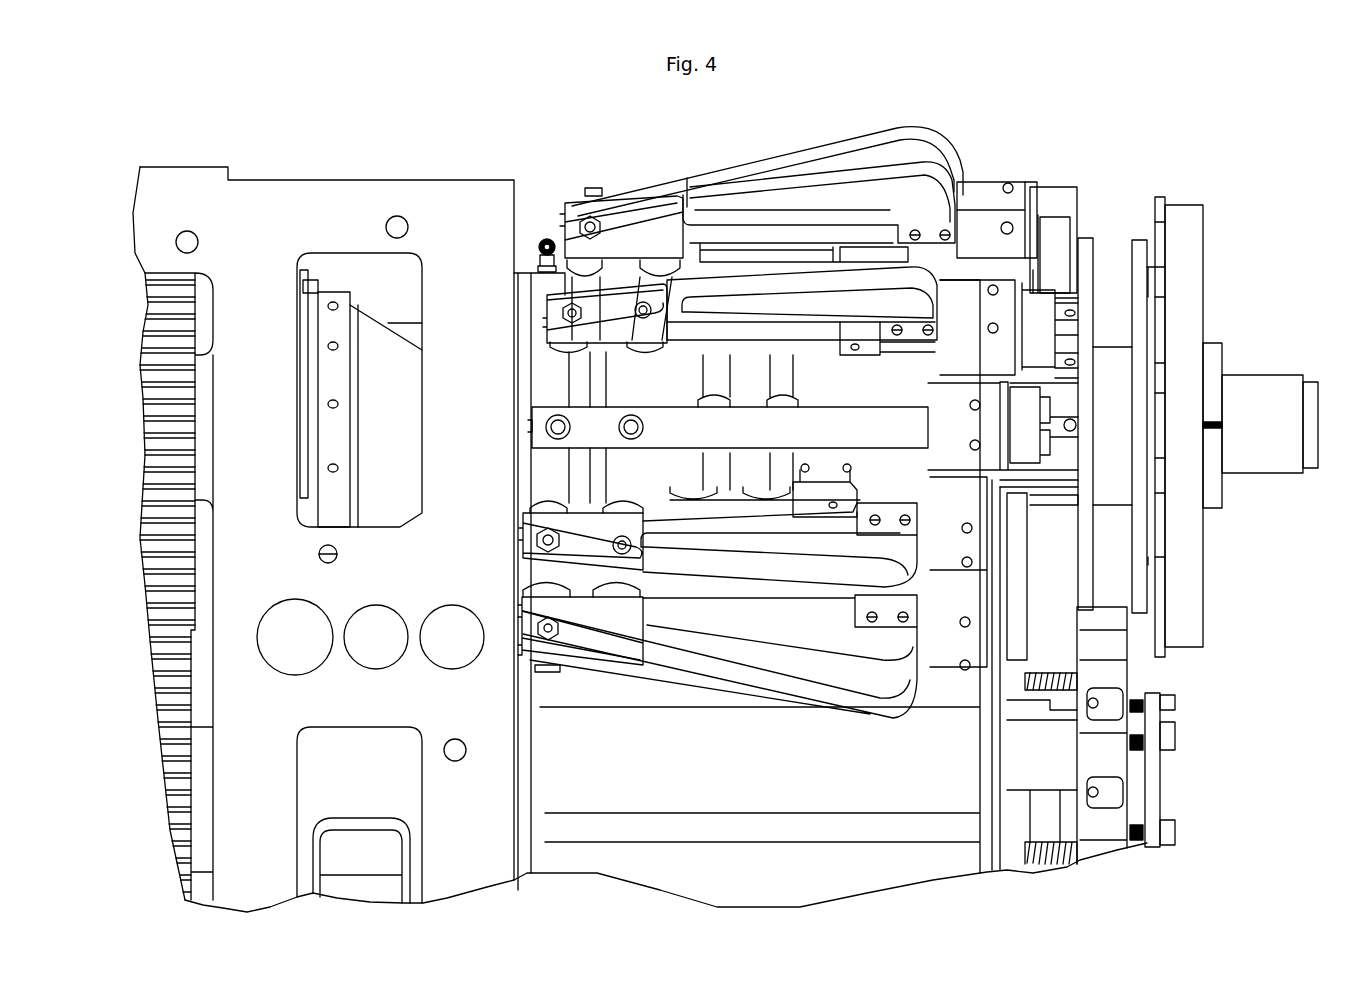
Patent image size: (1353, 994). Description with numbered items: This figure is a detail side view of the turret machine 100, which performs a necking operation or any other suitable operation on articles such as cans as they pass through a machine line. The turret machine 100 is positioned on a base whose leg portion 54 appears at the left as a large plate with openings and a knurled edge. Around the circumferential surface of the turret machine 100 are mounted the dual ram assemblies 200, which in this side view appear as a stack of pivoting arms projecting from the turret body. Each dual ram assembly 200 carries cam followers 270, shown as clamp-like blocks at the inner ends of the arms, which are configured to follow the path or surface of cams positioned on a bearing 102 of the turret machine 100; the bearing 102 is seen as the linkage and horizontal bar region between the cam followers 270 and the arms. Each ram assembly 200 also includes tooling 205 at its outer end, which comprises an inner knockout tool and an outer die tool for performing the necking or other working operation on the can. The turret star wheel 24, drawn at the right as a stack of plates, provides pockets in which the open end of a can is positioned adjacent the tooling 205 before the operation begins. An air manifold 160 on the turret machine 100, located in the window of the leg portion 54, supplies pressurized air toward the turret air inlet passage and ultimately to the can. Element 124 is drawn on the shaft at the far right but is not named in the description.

The turret machine 100 is at (160, 146).
The leg portion 54 is at (360, 198).
The air manifold 160 is at (400, 367).
The bearing 102 is at (600, 380).
The cam followers 270 is at (590, 270).
The dual ram assembly 200 is at (845, 160).
The tooling 205 is at (1057, 235).
The turret star wheel 24 is at (1112, 260).
The shaft 124 is at (1265, 385).